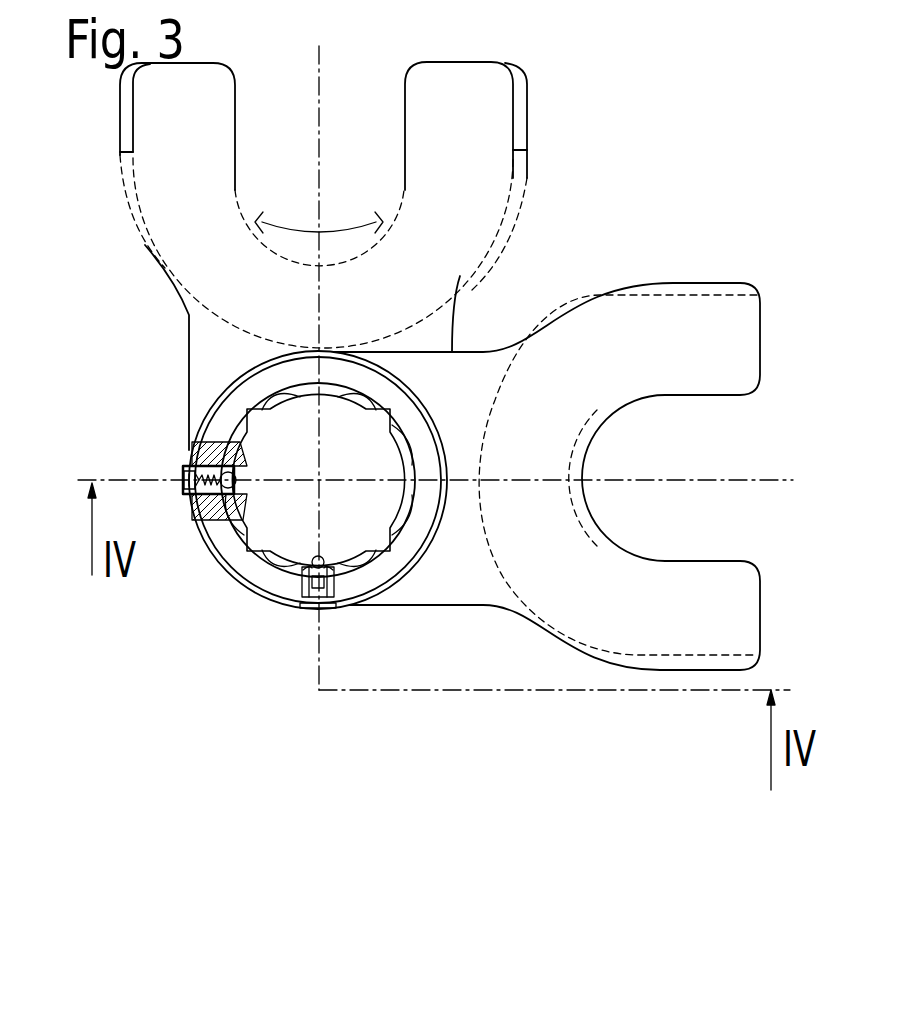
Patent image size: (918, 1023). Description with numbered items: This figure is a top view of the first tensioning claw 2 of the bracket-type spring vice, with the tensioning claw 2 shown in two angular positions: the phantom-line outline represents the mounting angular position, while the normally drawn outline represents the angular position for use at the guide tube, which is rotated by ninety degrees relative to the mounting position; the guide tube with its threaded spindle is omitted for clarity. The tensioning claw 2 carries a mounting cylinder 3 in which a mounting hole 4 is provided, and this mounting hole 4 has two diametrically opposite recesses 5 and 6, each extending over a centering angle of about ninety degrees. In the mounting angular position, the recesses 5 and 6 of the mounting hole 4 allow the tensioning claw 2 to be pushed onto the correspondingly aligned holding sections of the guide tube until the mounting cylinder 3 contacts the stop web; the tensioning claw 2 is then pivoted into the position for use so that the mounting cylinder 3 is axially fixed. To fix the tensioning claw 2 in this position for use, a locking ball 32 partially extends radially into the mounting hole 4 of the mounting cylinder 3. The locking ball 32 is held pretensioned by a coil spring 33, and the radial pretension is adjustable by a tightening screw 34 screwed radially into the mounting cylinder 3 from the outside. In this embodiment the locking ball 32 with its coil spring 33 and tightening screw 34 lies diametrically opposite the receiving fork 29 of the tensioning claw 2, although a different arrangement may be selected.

The first tensioning claw 2 is at (560, 360).
The receiving fork 29 is at (452, 135).
The mounting cylinder 3 is at (200, 392).
The mounting hole 4 is at (258, 383).
The recess 5 is at (357, 403).
The recess 6 is at (412, 448).
The locking ball 32 is at (237, 477).
The coil spring 33 is at (192, 452).
The tightening screw 34 is at (183, 480).